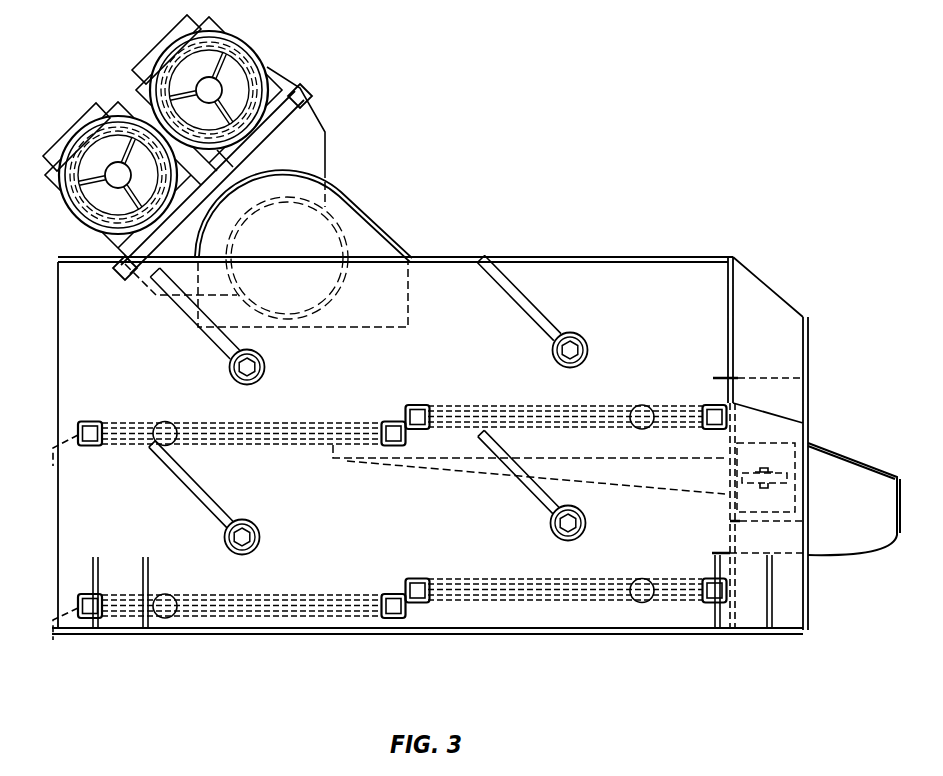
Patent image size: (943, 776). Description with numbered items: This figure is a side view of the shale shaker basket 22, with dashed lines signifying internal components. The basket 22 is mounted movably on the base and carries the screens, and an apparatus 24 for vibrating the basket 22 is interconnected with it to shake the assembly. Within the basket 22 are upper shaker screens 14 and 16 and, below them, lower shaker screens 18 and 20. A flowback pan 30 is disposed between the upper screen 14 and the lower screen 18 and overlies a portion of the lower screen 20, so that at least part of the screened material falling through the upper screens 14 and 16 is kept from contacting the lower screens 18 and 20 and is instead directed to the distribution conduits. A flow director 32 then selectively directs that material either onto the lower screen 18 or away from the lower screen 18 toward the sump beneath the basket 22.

The upper shaker screen 14 is at (607, 404).
The upper shaker screen 16 is at (147, 425).
The lower shaker screen 18 is at (575, 578).
The lower shaker screen 20 is at (325, 594).
The basket 22 is at (583, 256).
The apparatus for vibrating the basket 24 is at (157, 43).
The flowback pan 30 is at (680, 460).
The flow director 32 is at (780, 465).